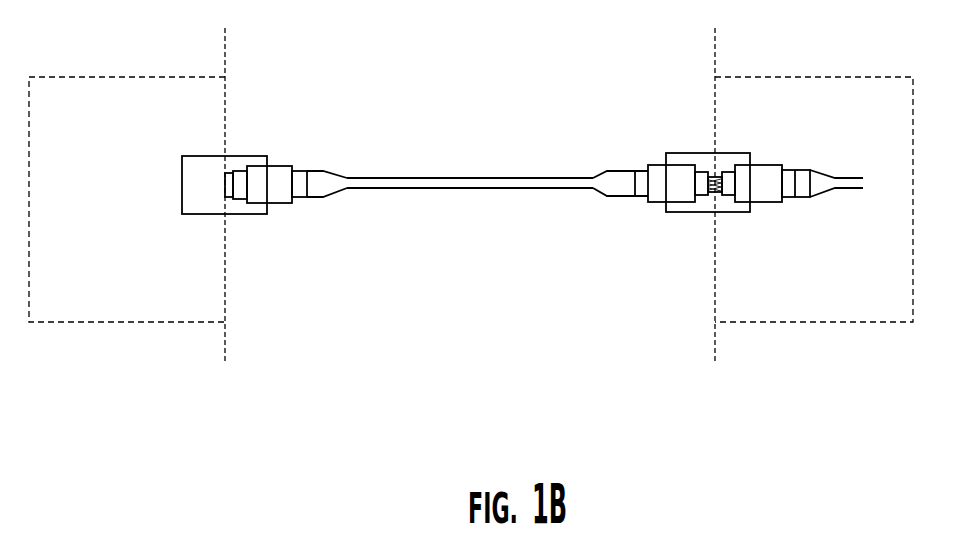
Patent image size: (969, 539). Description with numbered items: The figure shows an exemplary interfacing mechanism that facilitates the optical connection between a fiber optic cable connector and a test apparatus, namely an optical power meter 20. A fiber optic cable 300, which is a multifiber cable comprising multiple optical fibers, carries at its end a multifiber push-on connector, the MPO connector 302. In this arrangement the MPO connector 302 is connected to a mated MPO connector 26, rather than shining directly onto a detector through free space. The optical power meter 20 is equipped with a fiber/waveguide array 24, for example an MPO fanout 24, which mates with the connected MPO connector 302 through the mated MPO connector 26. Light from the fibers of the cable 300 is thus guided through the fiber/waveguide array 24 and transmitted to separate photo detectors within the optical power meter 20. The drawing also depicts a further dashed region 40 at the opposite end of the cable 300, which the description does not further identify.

The first device / transceiver housing 40 is at (87, 322).
The optical power meter 20 is at (842, 322).
The fiber optic cable 300 is at (411, 178).
The MPO connector 302 is at (658, 228).
The mated MPO connector 26 is at (733, 213).
The fiber/waveguide array 24 is at (812, 170).